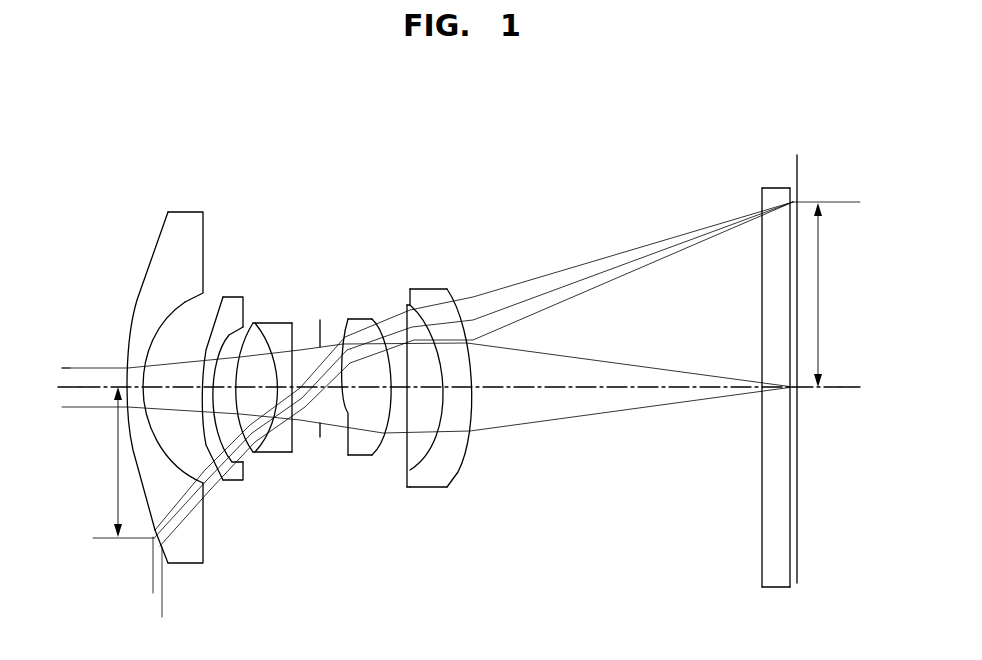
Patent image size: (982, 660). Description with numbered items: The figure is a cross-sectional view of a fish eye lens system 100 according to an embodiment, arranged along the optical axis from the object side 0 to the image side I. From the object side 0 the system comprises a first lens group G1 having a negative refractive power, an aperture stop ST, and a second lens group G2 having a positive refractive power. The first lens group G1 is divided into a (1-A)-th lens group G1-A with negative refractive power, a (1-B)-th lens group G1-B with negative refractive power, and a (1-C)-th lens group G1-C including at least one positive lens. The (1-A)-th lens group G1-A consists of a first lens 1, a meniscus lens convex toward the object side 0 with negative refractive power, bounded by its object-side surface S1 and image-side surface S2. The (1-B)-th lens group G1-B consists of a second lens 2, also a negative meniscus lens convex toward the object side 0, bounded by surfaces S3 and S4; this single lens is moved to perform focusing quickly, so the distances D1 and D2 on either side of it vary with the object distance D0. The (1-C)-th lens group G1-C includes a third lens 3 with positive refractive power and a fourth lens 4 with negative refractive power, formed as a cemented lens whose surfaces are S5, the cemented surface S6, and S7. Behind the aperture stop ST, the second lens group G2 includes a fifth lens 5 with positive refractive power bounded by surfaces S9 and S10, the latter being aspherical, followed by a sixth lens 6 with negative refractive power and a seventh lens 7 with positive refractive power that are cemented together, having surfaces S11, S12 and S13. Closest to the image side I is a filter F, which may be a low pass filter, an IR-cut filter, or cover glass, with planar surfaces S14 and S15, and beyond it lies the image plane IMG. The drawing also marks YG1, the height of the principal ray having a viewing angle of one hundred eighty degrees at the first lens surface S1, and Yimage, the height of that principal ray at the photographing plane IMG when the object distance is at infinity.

The fish eye lens system 100 is at (85, 155).
The object side 0 is at (57, 389).
The image side I is at (858, 389).
The first lens group G1 is at (293, 155).
The second lens group G2 is at (473, 155).
The (1-A)-th lens group G1-A is at (187, 212).
The (1-B)-th lens group G1-B is at (233, 297).
The (1-C)-th lens group G1-C is at (292, 300).
The first lens 1 is at (149, 415).
The second lens 2 is at (162, 418).
The third lens 3 is at (282, 434).
The fourth lens 4 is at (325, 415).
The fifth lens 5 is at (380, 404).
The sixth lens 6 is at (453, 394).
The seventh lens 7 is at (472, 370).
The first lens surface S1 is at (155, 247).
The second surface S2 is at (182, 305).
The third surface S3 is at (211, 332).
The fourth surface S4 is at (215, 358).
The fifth surface S5 is at (262, 456).
The sixth surface S6 is at (280, 442).
The seventh surface S7 is at (294, 412).
The aperture stop ST is at (320, 320).
The ninth surface S9 is at (365, 457).
The tenth surface S10 is at (380, 447).
The eleventh surface S11 is at (410, 488).
The twelfth surface S12 is at (455, 480).
The thirteenth surface S13 is at (473, 413).
The filter F is at (738, 357).
The fourteenth surface S14 is at (762, 492).
The fifteenth surface S15 is at (790, 532).
The image plane IMG is at (802, 357).
The object distance D0 is at (90, 392).
The variable distance D1 is at (170, 392).
The variable distance D2 is at (228, 392).
The principal ray height at first lens surface YG1 is at (117, 462).
The image height Yimage is at (841, 294).